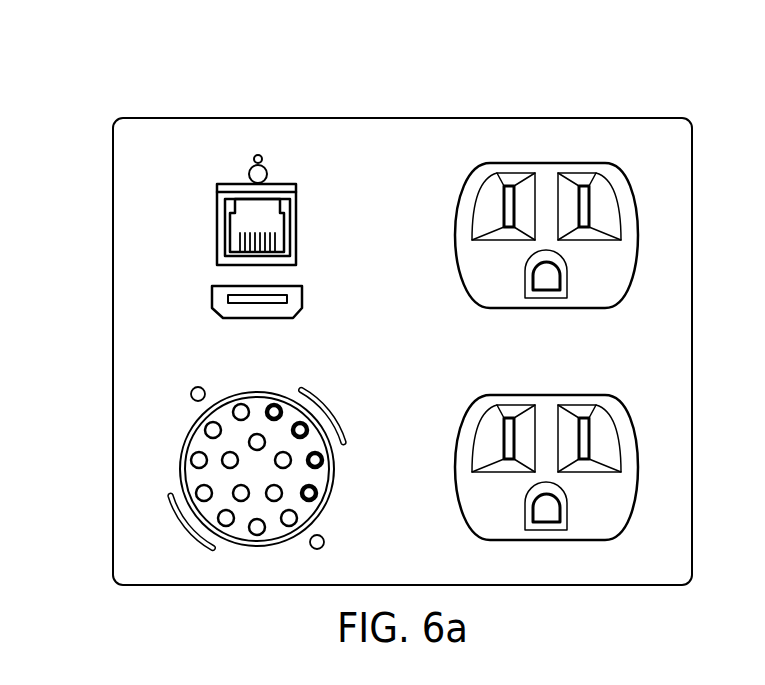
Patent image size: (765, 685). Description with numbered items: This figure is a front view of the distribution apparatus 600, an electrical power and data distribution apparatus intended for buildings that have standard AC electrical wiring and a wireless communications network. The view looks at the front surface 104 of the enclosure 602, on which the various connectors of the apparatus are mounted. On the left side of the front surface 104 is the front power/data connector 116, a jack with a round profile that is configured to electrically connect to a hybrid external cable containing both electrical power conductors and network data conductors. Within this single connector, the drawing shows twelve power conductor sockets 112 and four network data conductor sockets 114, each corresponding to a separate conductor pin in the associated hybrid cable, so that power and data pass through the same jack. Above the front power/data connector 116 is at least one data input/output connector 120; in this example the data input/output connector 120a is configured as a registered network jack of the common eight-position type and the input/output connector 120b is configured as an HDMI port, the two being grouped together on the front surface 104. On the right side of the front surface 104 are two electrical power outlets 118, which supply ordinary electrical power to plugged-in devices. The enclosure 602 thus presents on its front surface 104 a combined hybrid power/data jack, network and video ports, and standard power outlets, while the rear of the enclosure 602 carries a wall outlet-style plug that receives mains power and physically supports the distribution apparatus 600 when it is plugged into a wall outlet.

The distribution apparatus 600 is at (534, 69).
The front surface 104 is at (120, 350).
The enclosure 602 is at (113, 397).
The data input/output connector 120 is at (206, 160).
The data input/output connector configured as RJ-45 jack 120a is at (297, 225).
The input/output connector configured as HDMI port 120b is at (303, 295).
The front power/data connector 116 is at (258, 392).
The power conductor socket 112 is at (196, 457).
The network data conductor socket 114 is at (275, 410).
The electrical power outlet 118 is at (523, 395).